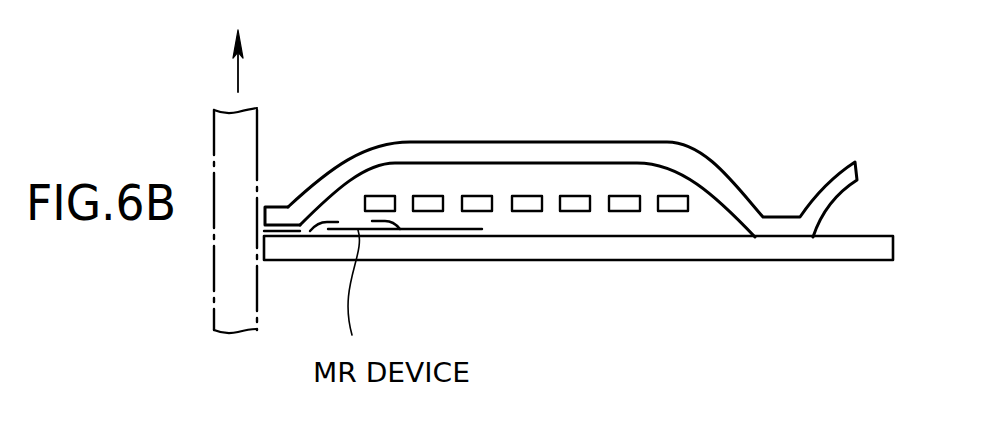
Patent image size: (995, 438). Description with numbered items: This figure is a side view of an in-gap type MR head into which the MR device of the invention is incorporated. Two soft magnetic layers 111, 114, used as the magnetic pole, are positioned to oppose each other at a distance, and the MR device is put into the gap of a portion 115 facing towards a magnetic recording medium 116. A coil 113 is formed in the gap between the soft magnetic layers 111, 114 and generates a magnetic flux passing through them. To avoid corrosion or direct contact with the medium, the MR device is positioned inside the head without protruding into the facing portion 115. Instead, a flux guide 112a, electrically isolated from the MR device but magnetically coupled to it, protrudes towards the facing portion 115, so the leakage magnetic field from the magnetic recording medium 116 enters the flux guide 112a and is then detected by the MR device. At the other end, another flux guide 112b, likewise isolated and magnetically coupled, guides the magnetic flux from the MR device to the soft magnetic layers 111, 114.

The soft magnetic layer 111 is at (567, 248).
The flux guide 112a is at (312, 236).
The flux guide 112b is at (472, 236).
The coil 113 is at (630, 211).
The soft magnetic layer 114 is at (562, 142).
The portion facing towards a magnetic recording medium 115 is at (283, 200).
The magnetic recording medium 116 is at (225, 335).